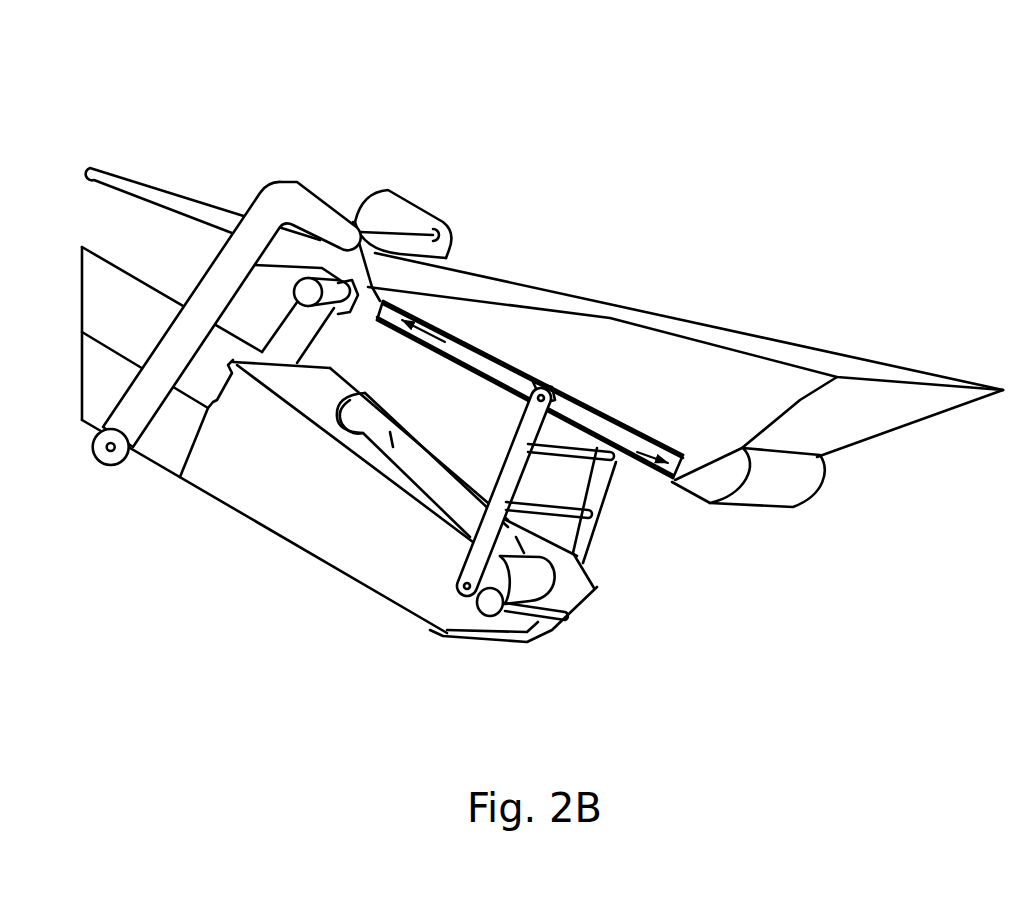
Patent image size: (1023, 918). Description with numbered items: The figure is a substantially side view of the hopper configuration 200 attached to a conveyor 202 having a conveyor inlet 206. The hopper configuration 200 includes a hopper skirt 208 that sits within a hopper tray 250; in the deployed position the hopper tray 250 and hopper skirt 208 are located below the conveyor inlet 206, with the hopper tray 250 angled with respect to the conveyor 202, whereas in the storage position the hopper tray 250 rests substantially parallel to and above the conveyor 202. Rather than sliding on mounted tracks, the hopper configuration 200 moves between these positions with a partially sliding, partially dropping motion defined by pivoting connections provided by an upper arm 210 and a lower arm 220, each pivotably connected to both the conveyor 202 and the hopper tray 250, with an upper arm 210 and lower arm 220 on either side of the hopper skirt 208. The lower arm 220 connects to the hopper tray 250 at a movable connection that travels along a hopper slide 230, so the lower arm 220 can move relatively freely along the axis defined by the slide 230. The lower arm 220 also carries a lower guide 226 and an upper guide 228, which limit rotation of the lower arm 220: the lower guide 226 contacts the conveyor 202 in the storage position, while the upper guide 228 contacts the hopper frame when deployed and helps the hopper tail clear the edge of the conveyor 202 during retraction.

The hopper configuration 200 is at (542, 343).
The conveyor 202 is at (106, 289).
The conveyor inlet 206 is at (370, 430).
The hopper skirt 208 is at (762, 341).
The upper arm 210 is at (165, 367).
The lower arm 220 is at (481, 549).
The lower guide 226 is at (562, 522).
The upper guide 228 is at (587, 464).
The hopper slide 230 is at (636, 443).
The hopper tray 250 is at (510, 358).